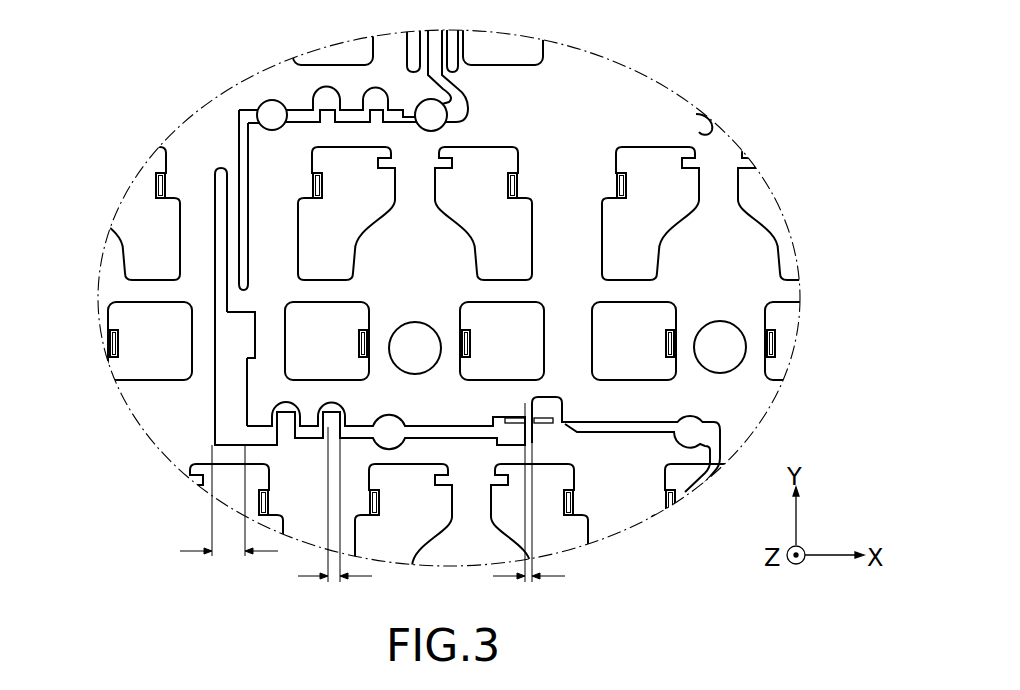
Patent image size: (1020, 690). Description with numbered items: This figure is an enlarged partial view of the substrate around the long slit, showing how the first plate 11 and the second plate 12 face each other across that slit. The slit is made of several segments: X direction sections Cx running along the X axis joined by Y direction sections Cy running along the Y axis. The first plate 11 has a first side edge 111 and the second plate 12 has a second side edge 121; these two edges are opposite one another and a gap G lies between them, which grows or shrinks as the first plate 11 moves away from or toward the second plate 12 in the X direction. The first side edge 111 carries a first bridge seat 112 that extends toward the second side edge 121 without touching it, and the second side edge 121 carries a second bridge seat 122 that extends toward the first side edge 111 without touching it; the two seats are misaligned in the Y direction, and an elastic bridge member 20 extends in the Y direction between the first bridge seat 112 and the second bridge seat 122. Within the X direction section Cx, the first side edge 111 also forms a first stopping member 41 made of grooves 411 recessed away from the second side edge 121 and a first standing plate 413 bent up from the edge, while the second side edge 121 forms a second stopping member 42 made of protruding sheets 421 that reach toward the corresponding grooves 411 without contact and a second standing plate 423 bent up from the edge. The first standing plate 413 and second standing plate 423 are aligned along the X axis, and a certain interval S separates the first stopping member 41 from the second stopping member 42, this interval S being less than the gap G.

The first plate 11 is at (478, 298).
The first side edge 111 is at (212, 430).
The first bridge seat 112 is at (243, 300).
The second plate 12 is at (156, 303).
The second side edge 121 is at (247, 370).
The second bridge seat 122 is at (160, 187).
The elastic bridge member 20 is at (227, 237).
The first stopping member 41 is at (569, 225).
The grooves 411 is at (328, 427).
The first standing plate 413 is at (513, 417).
The second stopping member 42 is at (569, 519).
The protruding sheets 421 is at (340, 432).
The second standing plate 423 is at (543, 415).
The gap G is at (230, 551).
The certain interval S is at (341, 576).
The X direction section Cx is at (608, 423).
The Y direction section Cy is at (230, 325).